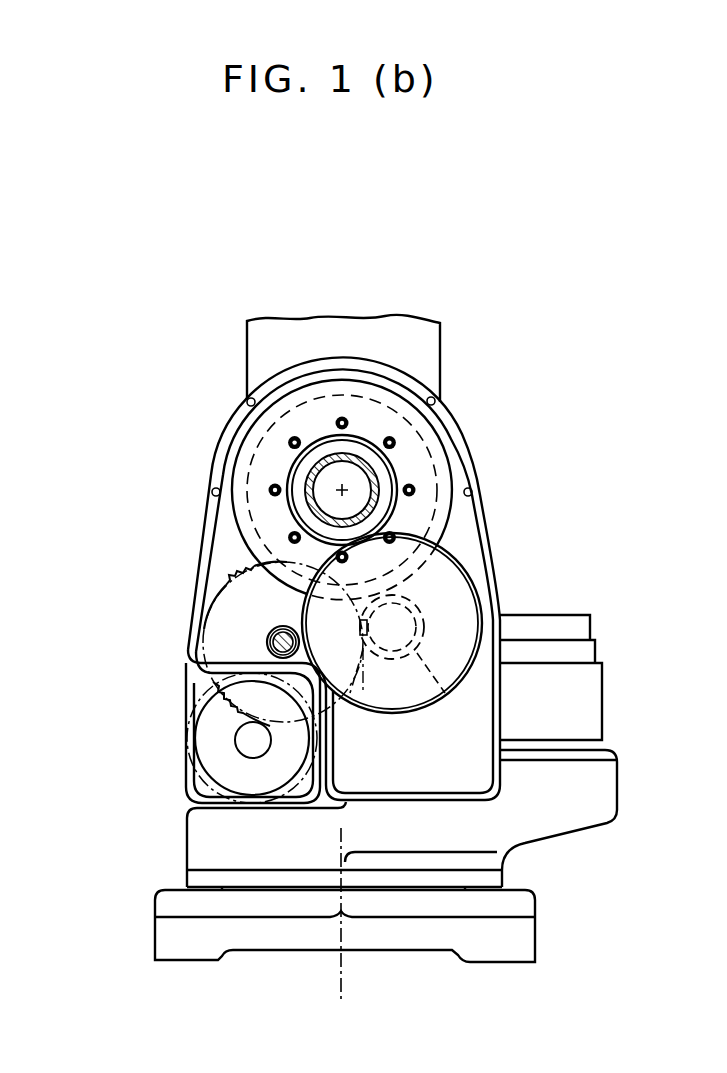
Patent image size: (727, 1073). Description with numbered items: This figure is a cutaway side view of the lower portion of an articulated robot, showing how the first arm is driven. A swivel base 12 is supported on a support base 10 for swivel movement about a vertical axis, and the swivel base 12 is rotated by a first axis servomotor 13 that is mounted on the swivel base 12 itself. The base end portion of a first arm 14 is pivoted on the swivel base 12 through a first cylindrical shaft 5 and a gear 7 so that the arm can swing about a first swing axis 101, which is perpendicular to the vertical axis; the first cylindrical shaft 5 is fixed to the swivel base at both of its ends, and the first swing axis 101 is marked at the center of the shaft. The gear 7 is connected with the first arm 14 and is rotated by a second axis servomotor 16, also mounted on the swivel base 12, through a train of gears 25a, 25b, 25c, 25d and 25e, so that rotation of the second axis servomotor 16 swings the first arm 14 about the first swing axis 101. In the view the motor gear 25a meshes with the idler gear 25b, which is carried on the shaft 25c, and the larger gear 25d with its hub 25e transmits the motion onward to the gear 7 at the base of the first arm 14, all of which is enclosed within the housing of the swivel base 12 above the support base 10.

The first cylindrical shaft 5 is at (310, 505).
The gear 7 is at (413, 463).
The support base 10 is at (177, 927).
The swivel base 12 is at (222, 552).
The first axis servomotor 13 is at (555, 670).
The first arm 14 is at (432, 350).
The second axis servomotor 16 is at (217, 772).
The first swing axis 101 is at (342, 490).
The gear 25a is at (238, 740).
The gear 25b is at (213, 645).
The gear 25c is at (268, 637).
The gear 25d is at (383, 695).
The gear 25e is at (413, 650).